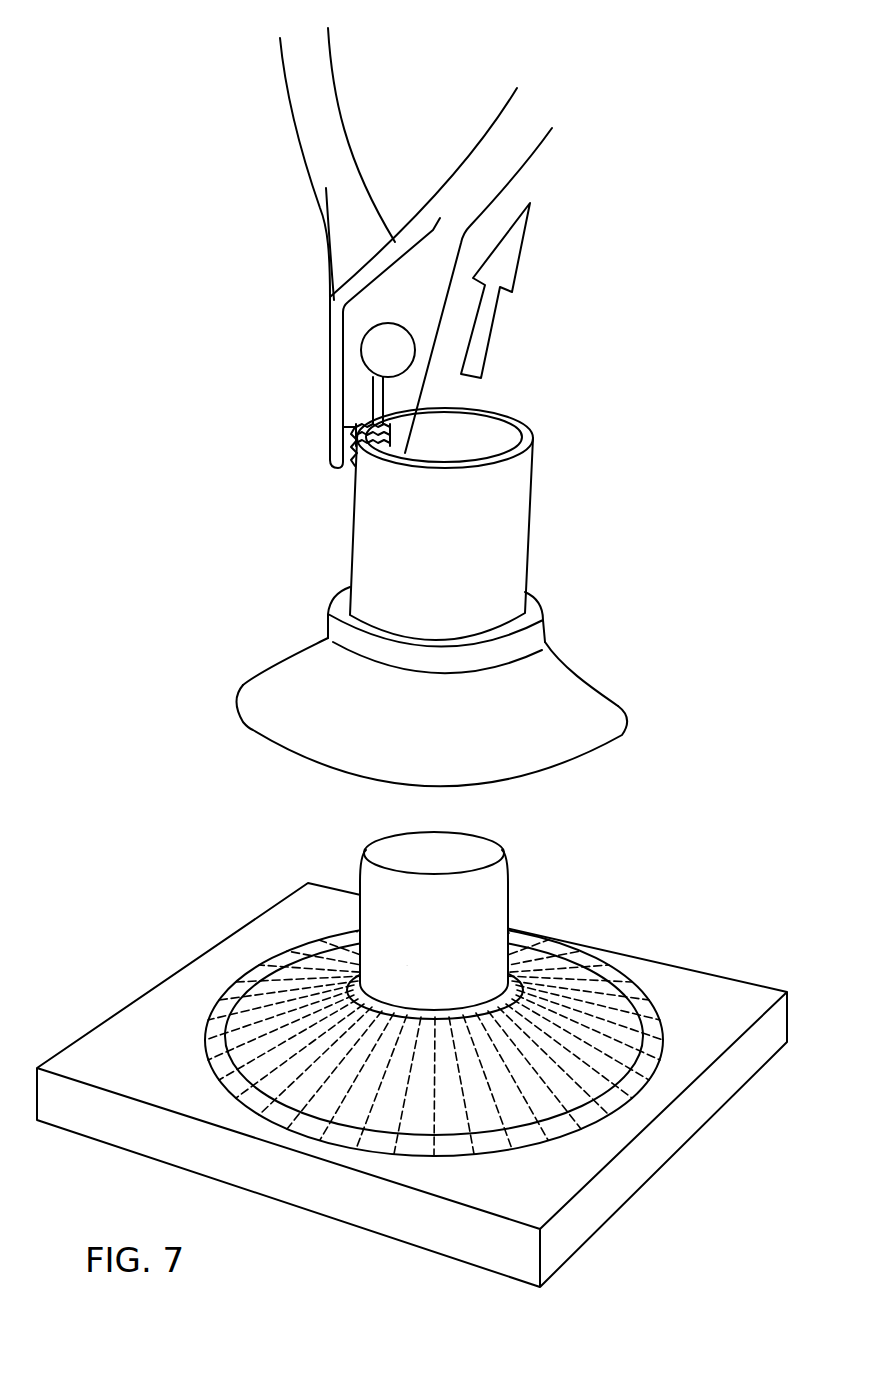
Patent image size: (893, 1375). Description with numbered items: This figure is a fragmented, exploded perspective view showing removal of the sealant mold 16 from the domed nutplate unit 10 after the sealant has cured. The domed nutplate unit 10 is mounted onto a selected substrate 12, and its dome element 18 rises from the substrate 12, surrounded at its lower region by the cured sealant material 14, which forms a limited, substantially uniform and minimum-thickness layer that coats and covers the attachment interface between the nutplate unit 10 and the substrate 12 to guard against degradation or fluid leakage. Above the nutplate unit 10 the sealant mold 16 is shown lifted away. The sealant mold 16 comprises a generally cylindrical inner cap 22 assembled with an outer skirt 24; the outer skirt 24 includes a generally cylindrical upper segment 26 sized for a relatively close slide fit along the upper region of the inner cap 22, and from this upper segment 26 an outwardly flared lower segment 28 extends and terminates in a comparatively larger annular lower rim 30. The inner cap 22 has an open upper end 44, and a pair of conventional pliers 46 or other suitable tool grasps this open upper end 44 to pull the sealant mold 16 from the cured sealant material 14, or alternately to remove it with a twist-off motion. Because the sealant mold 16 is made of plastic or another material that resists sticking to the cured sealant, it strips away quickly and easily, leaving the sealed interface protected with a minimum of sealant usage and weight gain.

The domed nutplate unit 10 is at (422, 1059).
The substrate 12 is at (718, 988).
The curable sealant material 14 is at (595, 995).
The sealant mold 16 is at (426, 583).
The dome element 18 is at (370, 880).
The inner cap 22 is at (476, 510).
The outer skirt 24 is at (415, 700).
The upper segment 26 is at (330, 623).
The lower segment 28 is at (273, 673).
The lower rim 30 is at (253, 733).
The open upper end 44 is at (495, 427).
The pliers 46 is at (348, 235).